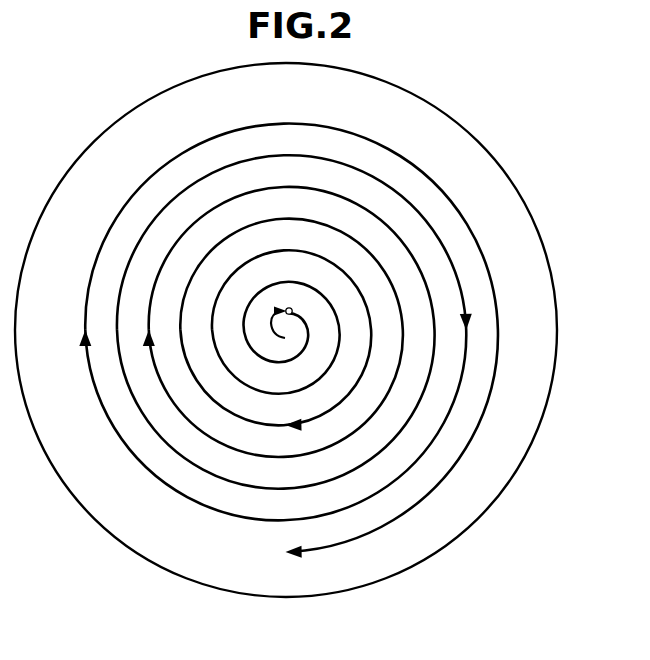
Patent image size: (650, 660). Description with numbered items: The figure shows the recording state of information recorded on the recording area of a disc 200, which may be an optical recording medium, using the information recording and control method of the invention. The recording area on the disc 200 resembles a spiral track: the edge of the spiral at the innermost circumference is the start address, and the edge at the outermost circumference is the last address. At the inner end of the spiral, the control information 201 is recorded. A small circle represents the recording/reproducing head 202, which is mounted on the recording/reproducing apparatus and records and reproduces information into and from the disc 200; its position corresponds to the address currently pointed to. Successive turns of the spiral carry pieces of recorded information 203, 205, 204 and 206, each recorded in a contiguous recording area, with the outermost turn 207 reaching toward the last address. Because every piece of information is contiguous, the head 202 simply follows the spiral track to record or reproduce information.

The disc 200 is at (532, 208).
The control information 201 is at (270, 322).
The recording/reproducing head 202 is at (290, 307).
The information recorded in the recording area 203 is at (272, 250).
The information recorded in the recording area 204 is at (375, 212).
The information recorded in the recording area 205 is at (324, 220).
The information recorded in the recording area 206 is at (142, 467).
The outermost spiral track turn 207 is at (471, 220).